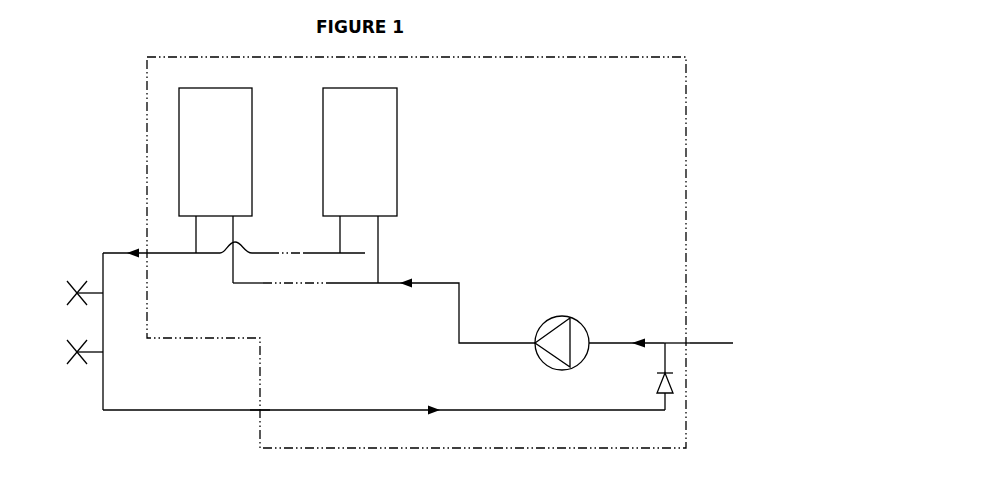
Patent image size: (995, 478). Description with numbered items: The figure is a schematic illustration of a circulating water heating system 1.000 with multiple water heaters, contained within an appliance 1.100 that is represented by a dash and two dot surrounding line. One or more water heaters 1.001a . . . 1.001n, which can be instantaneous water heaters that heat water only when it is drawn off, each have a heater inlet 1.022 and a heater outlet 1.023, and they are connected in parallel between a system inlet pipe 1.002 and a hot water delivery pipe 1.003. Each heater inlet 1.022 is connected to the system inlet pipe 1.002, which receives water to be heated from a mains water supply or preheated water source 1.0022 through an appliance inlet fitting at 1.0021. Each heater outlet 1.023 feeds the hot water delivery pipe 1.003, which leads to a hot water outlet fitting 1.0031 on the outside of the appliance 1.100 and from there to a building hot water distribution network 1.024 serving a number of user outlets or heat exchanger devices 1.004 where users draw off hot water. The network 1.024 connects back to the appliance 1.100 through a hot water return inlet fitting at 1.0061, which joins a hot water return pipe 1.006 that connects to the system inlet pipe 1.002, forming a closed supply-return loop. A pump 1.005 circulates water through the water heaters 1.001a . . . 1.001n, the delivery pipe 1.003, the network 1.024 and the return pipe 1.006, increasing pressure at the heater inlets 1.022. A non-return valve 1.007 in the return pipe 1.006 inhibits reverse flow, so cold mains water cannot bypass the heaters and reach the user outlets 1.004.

The circulating water heating system 1.000 is at (565, 83).
The appliance 1.100 is at (687, 198).
The water heater 1.001a is at (216, 152).
The water heater 1.001n is at (360, 152).
The system inlet pipe 1.002 is at (449, 282).
The appliance inlet fitting 1.0021 is at (686, 340).
The mains water supply or preheated water source 1.0022 is at (707, 340).
The hot water delivery pipe 1.003 is at (177, 253).
The hot water outlet fitting 1.0031 is at (128, 252).
The user outlets or heat exchanger devices 1.004 is at (70, 322).
The pump 1.005 is at (578, 320).
The hot water return pipe 1.006 is at (424, 409).
The hot water return inlet fitting 1.0061 is at (253, 415).
The non-return valve 1.007 is at (682, 383).
The heater inlet 1.022 is at (375, 260).
The heater outlet 1.023 is at (194, 240).
The building hot water distribution network 1.024 is at (103, 338).